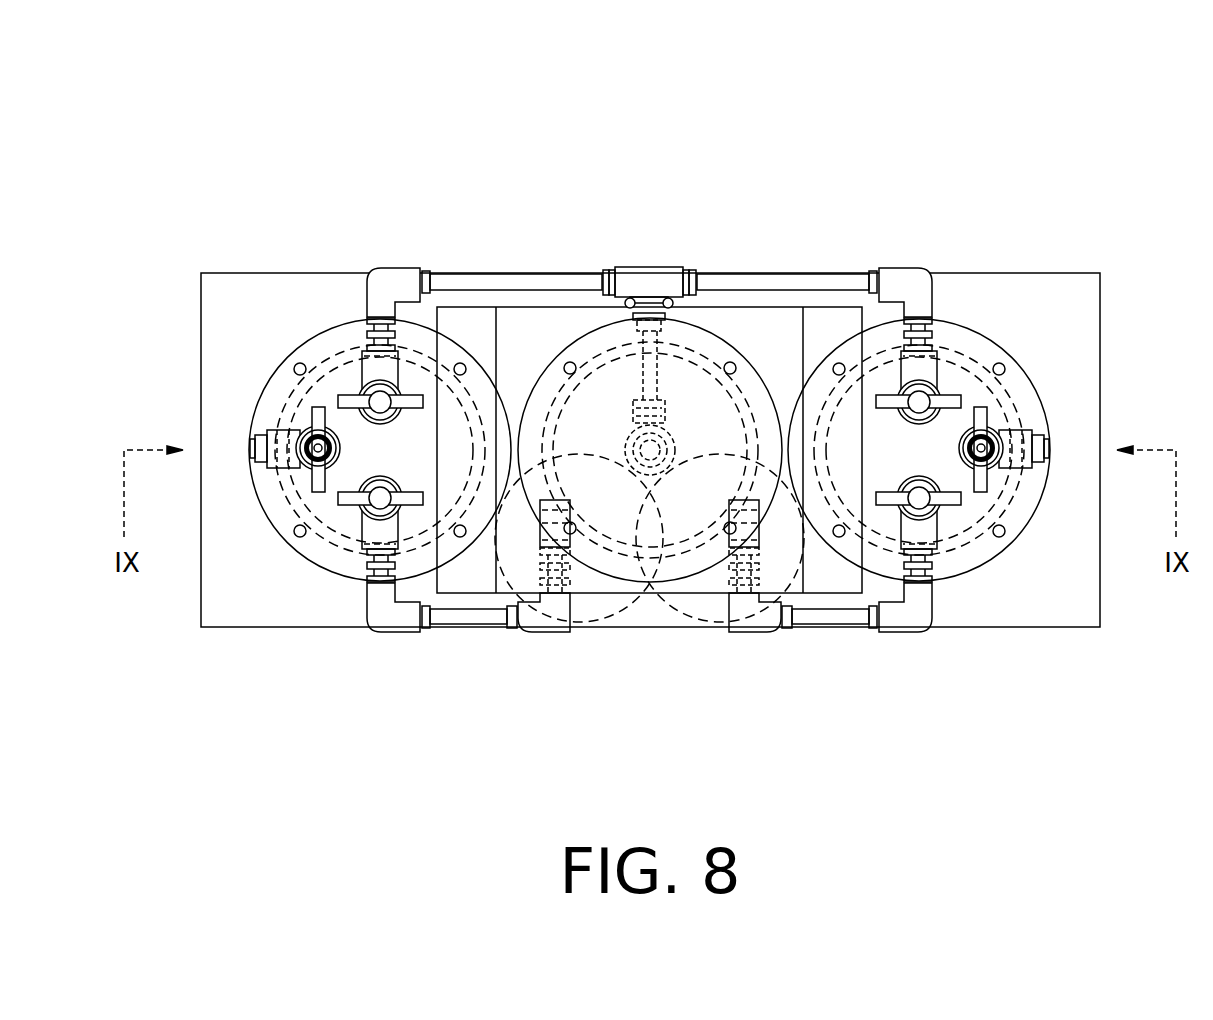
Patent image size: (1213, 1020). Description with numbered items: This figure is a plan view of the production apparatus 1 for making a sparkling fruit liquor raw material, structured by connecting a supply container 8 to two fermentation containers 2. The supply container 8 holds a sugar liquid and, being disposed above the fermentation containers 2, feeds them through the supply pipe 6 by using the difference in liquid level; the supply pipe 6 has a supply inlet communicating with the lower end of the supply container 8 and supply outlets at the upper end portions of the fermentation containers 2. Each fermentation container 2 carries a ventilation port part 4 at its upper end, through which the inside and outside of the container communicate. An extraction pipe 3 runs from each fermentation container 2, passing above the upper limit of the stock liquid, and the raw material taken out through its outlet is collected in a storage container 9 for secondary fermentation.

The production apparatus 1 is at (468, 114).
The fermentation container 2 is at (337, 348).
The extraction pipe 3 is at (453, 616).
The ventilation port part 4 is at (305, 432).
The supply pipe 6 is at (525, 283).
The supply container 8 is at (716, 337).
The storage container 9 is at (603, 609).